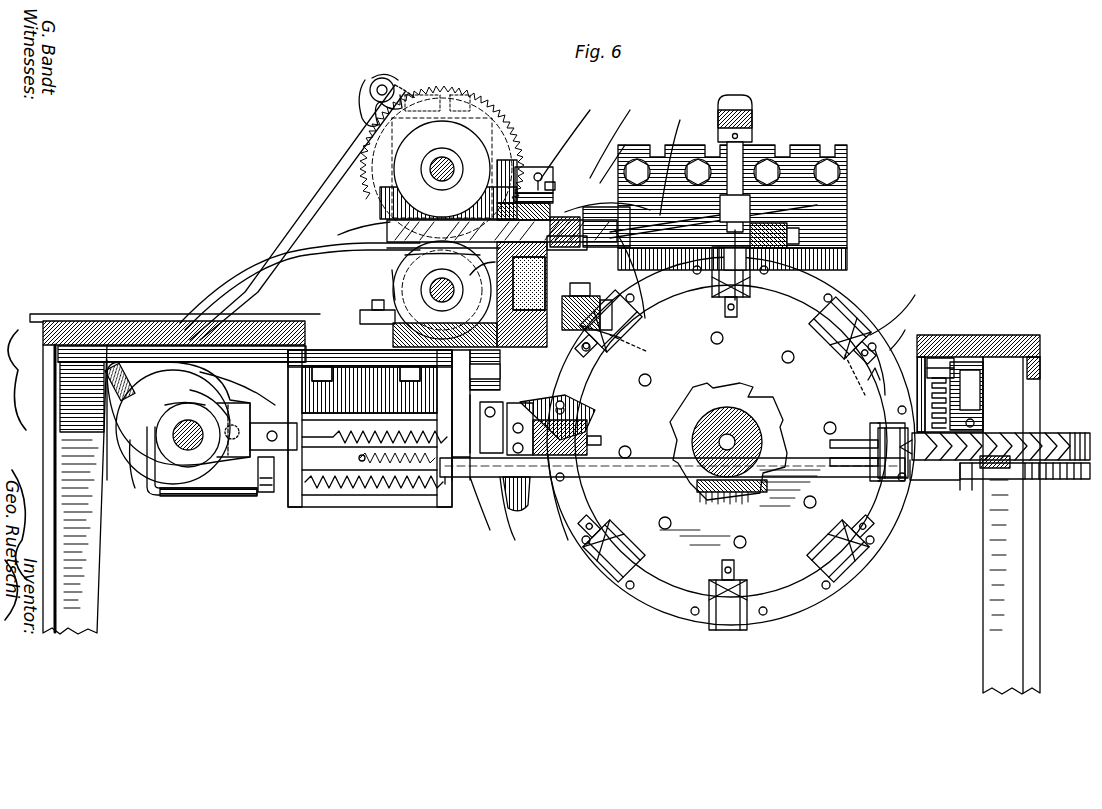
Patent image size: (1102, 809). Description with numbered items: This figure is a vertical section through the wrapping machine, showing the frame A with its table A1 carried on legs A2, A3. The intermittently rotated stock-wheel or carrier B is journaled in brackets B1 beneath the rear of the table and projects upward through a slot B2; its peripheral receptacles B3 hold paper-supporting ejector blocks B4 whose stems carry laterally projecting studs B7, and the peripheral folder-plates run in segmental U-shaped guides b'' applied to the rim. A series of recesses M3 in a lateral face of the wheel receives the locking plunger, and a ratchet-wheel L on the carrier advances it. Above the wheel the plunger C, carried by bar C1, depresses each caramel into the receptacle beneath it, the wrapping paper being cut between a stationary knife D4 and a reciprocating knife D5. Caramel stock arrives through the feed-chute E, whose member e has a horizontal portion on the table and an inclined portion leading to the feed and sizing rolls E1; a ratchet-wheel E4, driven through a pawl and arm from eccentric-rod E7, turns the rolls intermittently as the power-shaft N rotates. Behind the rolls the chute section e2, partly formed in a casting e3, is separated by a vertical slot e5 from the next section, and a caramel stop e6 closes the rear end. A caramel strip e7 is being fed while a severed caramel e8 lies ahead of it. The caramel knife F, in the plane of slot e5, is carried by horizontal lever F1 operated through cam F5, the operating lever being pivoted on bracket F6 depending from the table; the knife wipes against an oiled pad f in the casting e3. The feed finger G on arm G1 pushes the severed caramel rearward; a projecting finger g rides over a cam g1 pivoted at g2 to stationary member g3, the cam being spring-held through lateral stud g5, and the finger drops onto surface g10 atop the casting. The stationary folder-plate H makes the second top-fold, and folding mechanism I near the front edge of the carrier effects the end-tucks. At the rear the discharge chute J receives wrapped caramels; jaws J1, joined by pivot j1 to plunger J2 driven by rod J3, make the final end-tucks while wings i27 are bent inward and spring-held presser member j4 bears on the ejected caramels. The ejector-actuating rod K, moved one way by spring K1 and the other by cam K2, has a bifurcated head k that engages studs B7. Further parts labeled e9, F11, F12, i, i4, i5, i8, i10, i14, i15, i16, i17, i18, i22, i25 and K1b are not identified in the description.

The frame A is at (163, 343).
The table A1 is at (988, 335).
The legs A2 is at (98, 600).
The legs A3 is at (983, 627).
The rotary stock-wheel B is at (731, 441).
The brackets B1 is at (745, 410).
The slot B2 is at (900, 310).
The peripheral receptacles B3 is at (823, 325).
The ejector blocks B4 is at (630, 340).
The studs B7 is at (832, 430).
The guides b'' is at (866, 313).
The plunger C is at (735, 221).
The bar C1 is at (754, 112).
The stationary knife D4 is at (855, 290).
The vertically reciprocating knife D5 is at (848, 222).
The feed-chute E is at (575, 293).
The feed and sizing rolls E1 is at (345, 160).
The ratchet-wheel E4 is at (465, 85).
The eccentric-rod E7 is at (275, 238).
The chute member e is at (312, 280).
The chute section e2 is at (442, 256).
The casting e3 is at (479, 272).
The slot e5 is at (567, 250).
The caramel stop e6 is at (845, 205).
The caramel strip e7 is at (338, 235).
The caramel e8 is at (596, 196).
The arc guide e9 is at (650, 320).
The caramel knife F is at (588, 312).
The lever F1 is at (392, 278).
The cam F5 is at (365, 112).
The bracket F6 is at (400, 90).
The post F11 is at (606, 330).
The feed roller F12 is at (455, 160).
The pad f is at (522, 294).
The feed finger G is at (560, 185).
The arm G1 is at (583, 180).
The projecting finger g is at (540, 166).
The cam g1 is at (616, 152).
The pivot g2 is at (540, 176).
The stationary member g3 is at (611, 132).
The lateral stud g5 is at (674, 155).
The surface g10 is at (567, 130).
The stationary folder-plate H is at (530, 385).
The folding mechanism I is at (370, 445).
The post i is at (462, 480).
The cam i4 is at (185, 392).
The arm i5 is at (468, 500).
The pawl i8 is at (590, 440).
The pawl plate i10 is at (575, 405).
The hanging plate i14 is at (528, 505).
The spring i15 is at (318, 437).
The lever i16 is at (240, 420).
The arm i17 is at (510, 540).
The link i18 is at (130, 470).
The arm i22 is at (487, 504).
The spring i25 is at (372, 422).
The wings i27 is at (886, 373).
The discharge chute J is at (1068, 440).
The jaws J1 is at (957, 482).
The plunger J2 is at (992, 468).
The slide J3 is at (1050, 480).
The pivot j1 is at (966, 490).
The presser member j4 is at (947, 393).
The ejector-actuating slide K is at (650, 477).
The spring K1 is at (882, 478).
The shaft end K1b is at (448, 478).
The cam K2 is at (232, 458).
The bifurcated head k is at (840, 452).
The ratchet-wheel L is at (696, 400).
The recesses M3 is at (668, 522).
The power-shaft N is at (190, 450).